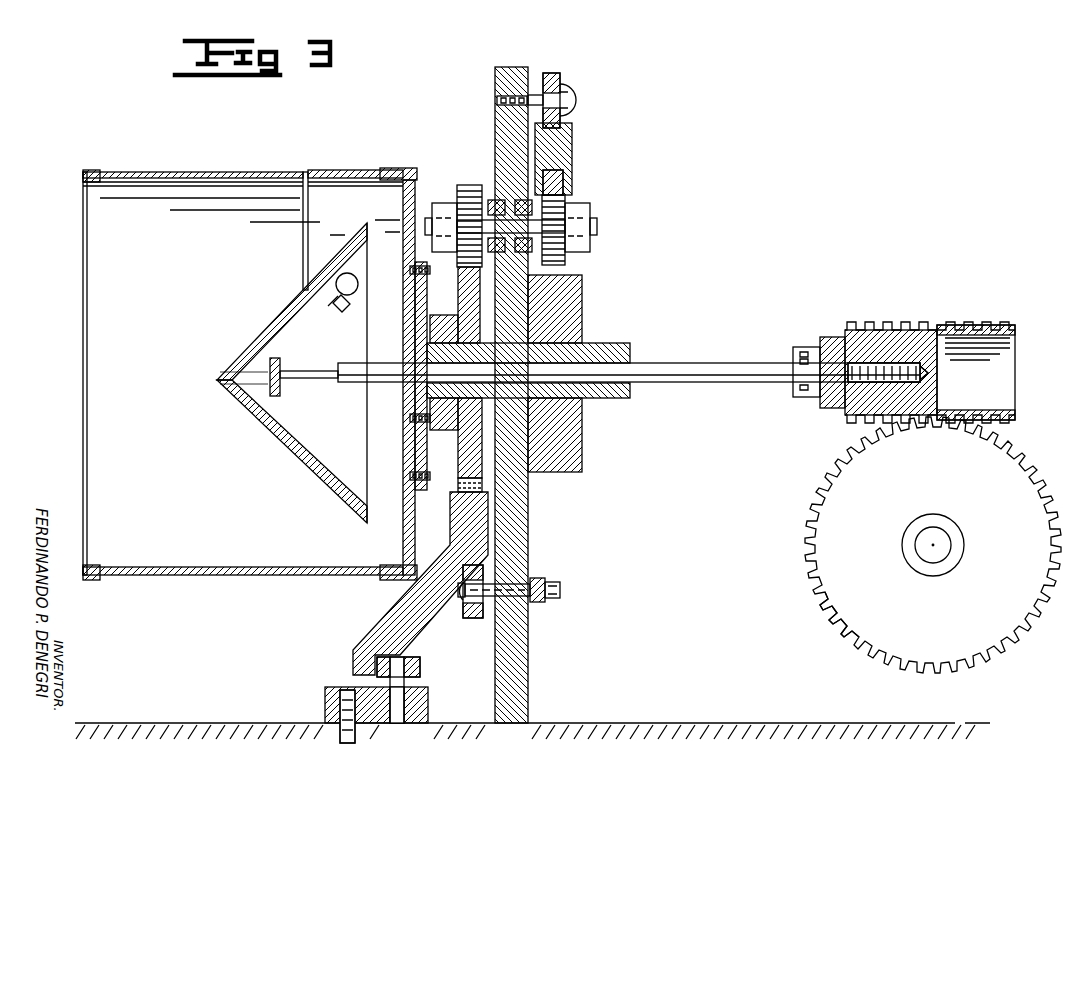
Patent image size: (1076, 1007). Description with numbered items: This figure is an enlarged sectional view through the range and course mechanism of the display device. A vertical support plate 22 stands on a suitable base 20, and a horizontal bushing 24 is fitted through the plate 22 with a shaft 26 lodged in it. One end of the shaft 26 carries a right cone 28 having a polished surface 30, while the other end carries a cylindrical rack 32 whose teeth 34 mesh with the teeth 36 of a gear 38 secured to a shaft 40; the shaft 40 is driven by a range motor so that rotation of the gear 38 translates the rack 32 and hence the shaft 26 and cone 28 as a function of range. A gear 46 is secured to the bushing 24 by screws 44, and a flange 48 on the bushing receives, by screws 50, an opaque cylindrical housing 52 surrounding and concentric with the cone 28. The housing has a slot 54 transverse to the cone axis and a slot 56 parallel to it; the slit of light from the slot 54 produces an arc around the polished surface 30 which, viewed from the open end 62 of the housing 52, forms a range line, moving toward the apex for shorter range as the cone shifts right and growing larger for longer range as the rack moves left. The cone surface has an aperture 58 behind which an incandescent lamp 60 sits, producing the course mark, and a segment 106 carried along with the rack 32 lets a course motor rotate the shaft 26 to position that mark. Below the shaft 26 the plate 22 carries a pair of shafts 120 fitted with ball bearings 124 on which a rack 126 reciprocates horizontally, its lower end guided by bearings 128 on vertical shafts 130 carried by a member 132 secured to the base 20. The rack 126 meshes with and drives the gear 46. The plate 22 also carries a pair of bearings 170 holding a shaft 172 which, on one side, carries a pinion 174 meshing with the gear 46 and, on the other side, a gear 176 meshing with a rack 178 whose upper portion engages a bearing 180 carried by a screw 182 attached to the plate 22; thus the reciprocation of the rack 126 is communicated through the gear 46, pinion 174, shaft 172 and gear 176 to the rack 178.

The base 20 is at (606, 722).
The vertical support plate 22 is at (530, 678).
The horizontal bushing 24 is at (630, 350).
The shaft 26 is at (718, 384).
The right cone 28 is at (304, 464).
The polished surface 30 is at (268, 435).
The cylindrical rack 32 is at (920, 322).
The teeth 34 is at (983, 325).
The teeth 36 is at (805, 515).
The gear 38 is at (840, 605).
The shaft 40 is at (938, 571).
The screws 44 is at (410, 420).
The gear 46 is at (478, 462).
The flange 48 is at (426, 441).
The screws 50 is at (410, 478).
The cylindrical housing 52 is at (241, 575).
The slot 54 is at (310, 234).
The slot 56 is at (225, 172).
The aperture 58 is at (368, 246).
The incandescent lamp 60 is at (356, 289).
The open end 62 is at (83, 310).
The segment 106 is at (822, 335).
The shafts 120 is at (541, 578).
The ball bearings 124 is at (480, 612).
The rack 126 is at (488, 545).
The bearings 128 is at (420, 667).
The vertical shafts 130 is at (428, 696).
The member 132 is at (325, 700).
The bearings 170 is at (560, 258).
The shaft 172 is at (597, 225).
The pinion 174 is at (470, 185).
The gear 176 is at (565, 195).
The rack 178 is at (572, 150).
The bearing 180 is at (554, 73).
The screw 182 is at (570, 98).